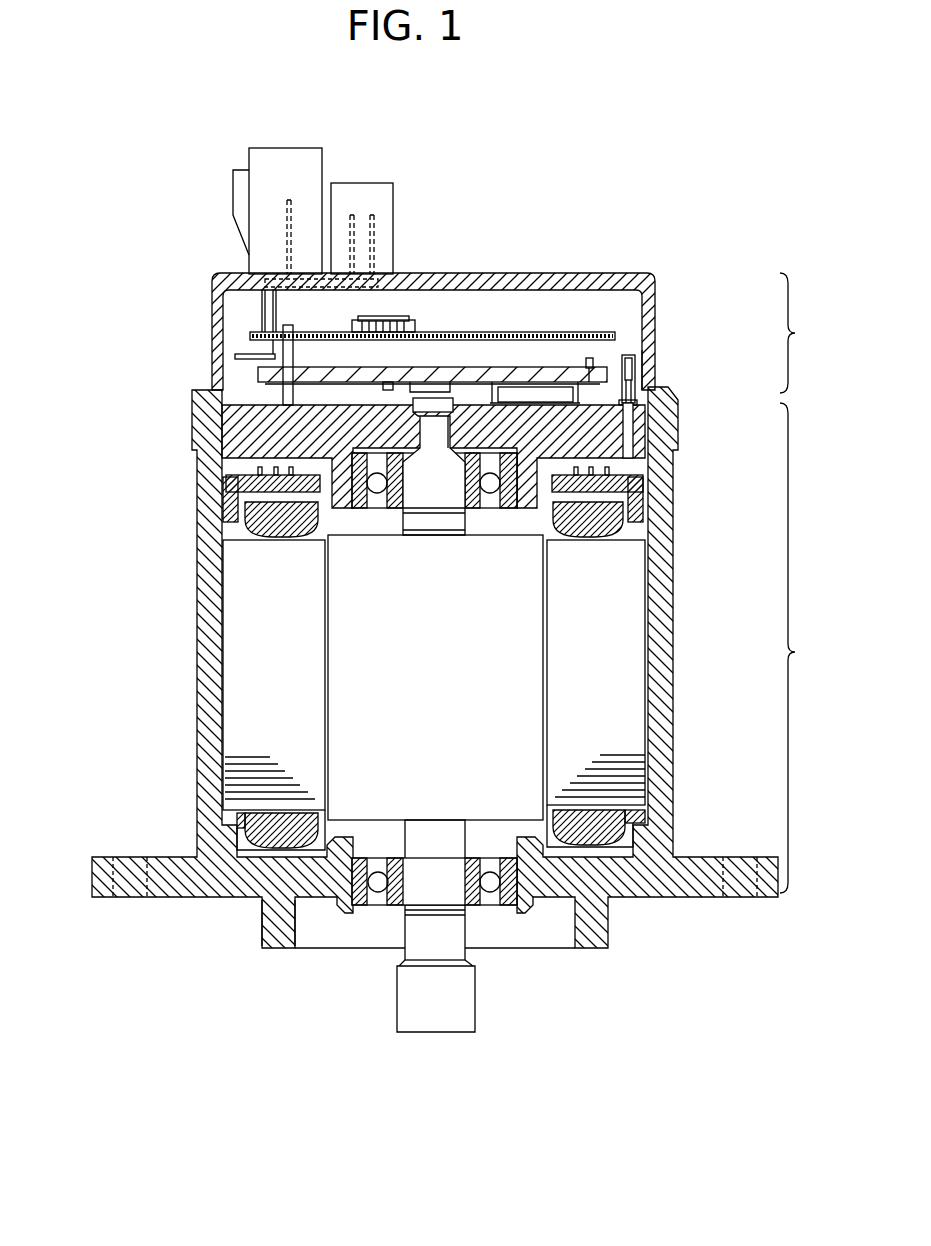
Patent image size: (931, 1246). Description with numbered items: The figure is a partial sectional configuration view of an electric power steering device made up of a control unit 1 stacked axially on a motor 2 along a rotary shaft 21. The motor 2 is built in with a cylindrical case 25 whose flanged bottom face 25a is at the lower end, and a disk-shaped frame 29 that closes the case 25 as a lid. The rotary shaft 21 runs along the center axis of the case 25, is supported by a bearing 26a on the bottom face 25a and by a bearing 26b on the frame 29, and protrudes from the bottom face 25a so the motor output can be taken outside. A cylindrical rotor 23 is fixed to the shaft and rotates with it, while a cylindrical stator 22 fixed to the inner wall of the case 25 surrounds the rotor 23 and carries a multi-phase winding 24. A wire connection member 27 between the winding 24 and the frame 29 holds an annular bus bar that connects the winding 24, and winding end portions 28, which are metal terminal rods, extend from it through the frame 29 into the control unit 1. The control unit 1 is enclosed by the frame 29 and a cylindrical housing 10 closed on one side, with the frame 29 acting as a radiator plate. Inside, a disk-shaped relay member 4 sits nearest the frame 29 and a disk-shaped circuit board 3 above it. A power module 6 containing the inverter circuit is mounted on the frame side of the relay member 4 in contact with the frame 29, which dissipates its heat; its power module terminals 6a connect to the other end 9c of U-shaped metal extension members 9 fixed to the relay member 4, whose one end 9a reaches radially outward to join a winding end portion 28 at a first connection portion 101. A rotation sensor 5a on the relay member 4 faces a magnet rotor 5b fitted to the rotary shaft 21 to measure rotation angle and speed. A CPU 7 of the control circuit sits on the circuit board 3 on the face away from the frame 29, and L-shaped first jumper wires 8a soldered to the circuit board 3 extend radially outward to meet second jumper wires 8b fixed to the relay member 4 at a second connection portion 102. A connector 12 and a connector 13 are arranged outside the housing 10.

The control unit 1 is at (798, 333).
The motor 2 is at (798, 648).
The circuit board 3 is at (452, 367).
The relay member 4 is at (467, 376).
The rotation sensor 5a is at (413, 405).
The magnet rotor 5b is at (425, 425).
The power module 6 is at (530, 387).
The power module terminal 6a is at (589, 358).
The CPU 7 is at (400, 313).
The first jumper wire 8a is at (248, 336).
The second jumper wire 8b is at (258, 375).
The extension member 9 is at (640, 388).
The one end of extension member 9a is at (636, 378).
The another end of extension member 9c is at (640, 358).
The housing 10 is at (212, 281).
The connector 12 is at (300, 148).
The connector 13 is at (370, 183).
The rotary shaft 21 is at (437, 1032).
The stator 22 is at (245, 675).
The rotor 23 is at (325, 722).
The winding 24 is at (243, 528).
The case 25 is at (197, 800).
The bottom face 25a is at (235, 898).
The bearing 26a is at (360, 905).
The bearing 26b is at (345, 530).
The wire connection member 27 is at (645, 510).
The winding end portion 28 is at (640, 403).
The frame 29 is at (640, 428).
The first connection portion 101 is at (645, 372).
The second connection portion 102 is at (236, 357).